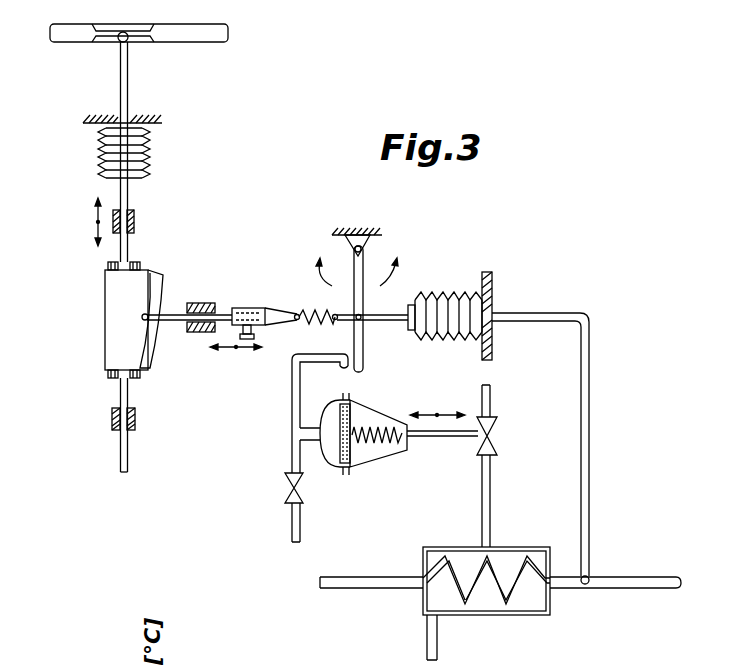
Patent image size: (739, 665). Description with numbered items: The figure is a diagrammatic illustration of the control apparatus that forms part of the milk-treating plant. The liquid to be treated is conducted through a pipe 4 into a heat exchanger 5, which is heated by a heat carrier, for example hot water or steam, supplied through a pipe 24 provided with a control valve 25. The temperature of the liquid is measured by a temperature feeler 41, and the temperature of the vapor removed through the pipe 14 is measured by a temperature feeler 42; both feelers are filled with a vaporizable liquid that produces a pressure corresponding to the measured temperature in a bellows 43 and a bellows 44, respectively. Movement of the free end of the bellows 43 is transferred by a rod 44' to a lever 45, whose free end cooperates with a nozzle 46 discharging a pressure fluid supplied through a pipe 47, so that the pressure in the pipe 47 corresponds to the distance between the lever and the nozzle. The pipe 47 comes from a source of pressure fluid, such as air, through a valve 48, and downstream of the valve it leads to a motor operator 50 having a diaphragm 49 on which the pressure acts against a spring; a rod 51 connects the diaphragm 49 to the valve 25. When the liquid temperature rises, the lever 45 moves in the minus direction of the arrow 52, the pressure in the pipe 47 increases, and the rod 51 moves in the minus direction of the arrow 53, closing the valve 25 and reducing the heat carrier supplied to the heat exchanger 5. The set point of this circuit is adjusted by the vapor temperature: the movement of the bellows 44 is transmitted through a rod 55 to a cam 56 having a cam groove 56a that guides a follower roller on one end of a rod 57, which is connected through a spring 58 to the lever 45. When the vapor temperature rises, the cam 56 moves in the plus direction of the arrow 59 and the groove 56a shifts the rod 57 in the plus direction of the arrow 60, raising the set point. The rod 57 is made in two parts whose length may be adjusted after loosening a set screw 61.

The pipe 14 is at (78, 40).
The temperature feeler 42 is at (131, 42).
The rod 55 is at (126, 250).
The bellows 44 is at (153, 153).
The arrow 59 is at (95, 222).
The cam 56 is at (104, 308).
The cam groove 56a is at (142, 344).
The rod 57 is at (174, 315).
The set screw 61 is at (256, 337).
The arrow 60 is at (246, 352).
The spring 58 is at (312, 302).
The rod 44' is at (375, 336).
The lever 45 is at (365, 364).
The arrow 52 is at (323, 280).
The bellows 43 is at (445, 292).
The temperature feeler 41 is at (592, 578).
The nozzle 46 is at (347, 362).
The pipe 47 is at (291, 416).
The valve 48 is at (285, 481).
The diaphragm 49 is at (341, 458).
The motor operator 50 is at (390, 452).
The rod 51 is at (455, 438).
The arrow 53 is at (437, 412).
The control valve 25 is at (498, 441).
The pipe 24 is at (489, 505).
The heat exchanger 5 is at (516, 606).
The pipe 4 is at (350, 586).